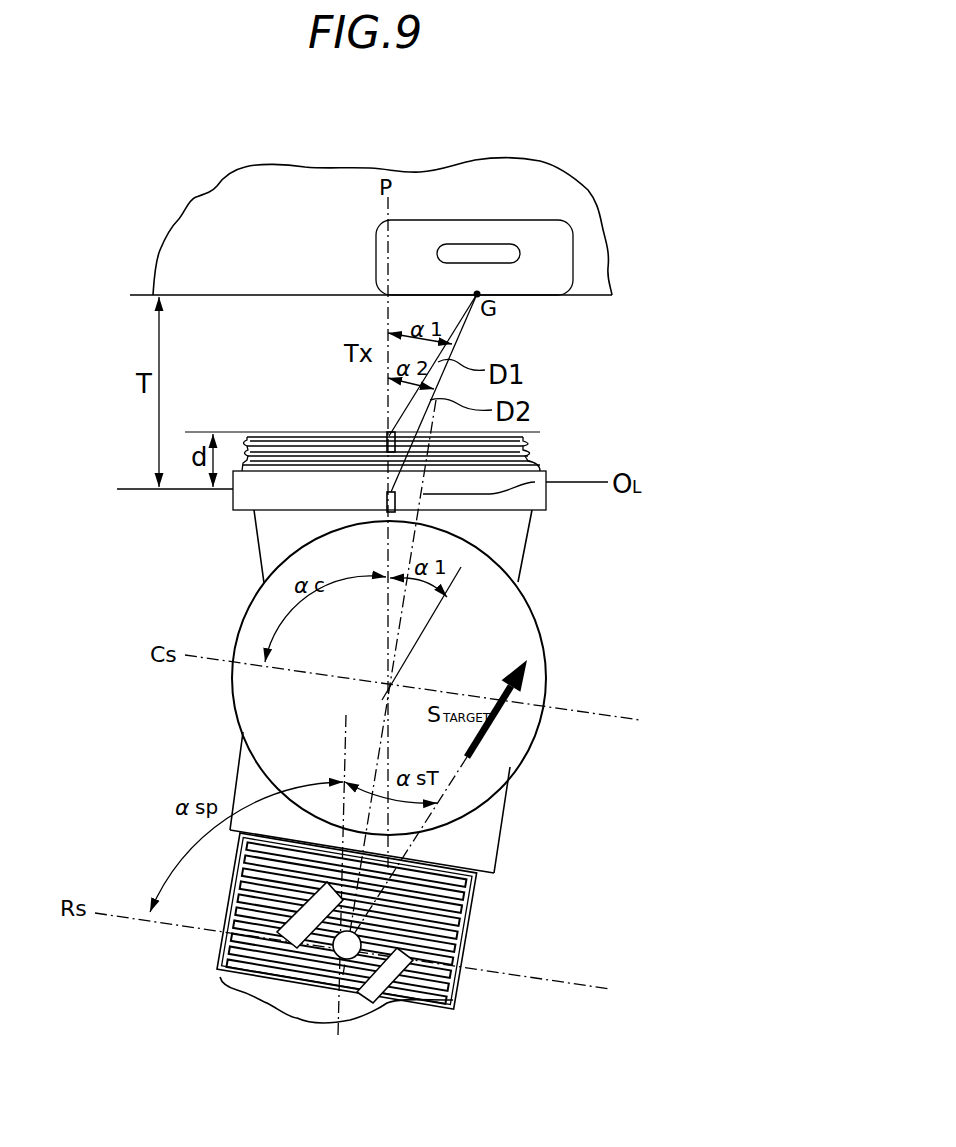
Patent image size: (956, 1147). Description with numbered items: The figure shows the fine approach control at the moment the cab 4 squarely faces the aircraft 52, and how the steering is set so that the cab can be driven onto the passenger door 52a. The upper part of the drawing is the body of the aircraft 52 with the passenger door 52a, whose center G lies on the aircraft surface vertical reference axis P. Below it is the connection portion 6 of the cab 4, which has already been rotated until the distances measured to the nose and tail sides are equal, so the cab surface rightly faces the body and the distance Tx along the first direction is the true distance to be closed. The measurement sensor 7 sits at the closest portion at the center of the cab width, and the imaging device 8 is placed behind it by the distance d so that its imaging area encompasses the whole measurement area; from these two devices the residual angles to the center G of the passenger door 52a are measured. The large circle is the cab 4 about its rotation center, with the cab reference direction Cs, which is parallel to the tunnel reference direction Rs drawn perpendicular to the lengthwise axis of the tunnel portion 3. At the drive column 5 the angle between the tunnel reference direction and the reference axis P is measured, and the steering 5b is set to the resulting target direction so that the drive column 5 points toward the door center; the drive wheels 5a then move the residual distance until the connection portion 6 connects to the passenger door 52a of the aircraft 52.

The tunnel portion 3 is at (494, 877).
The cab 4 is at (517, 642).
The drive column 5 is at (348, 965).
The drive wheels 5a is at (397, 970).
The steering 5b is at (345, 890).
The connection portion 6 is at (543, 446).
The measurement sensor 7 is at (387, 432).
The imaging device 8 is at (387, 498).
The aircraft 52 is at (590, 273).
The passenger door 52a is at (533, 288).